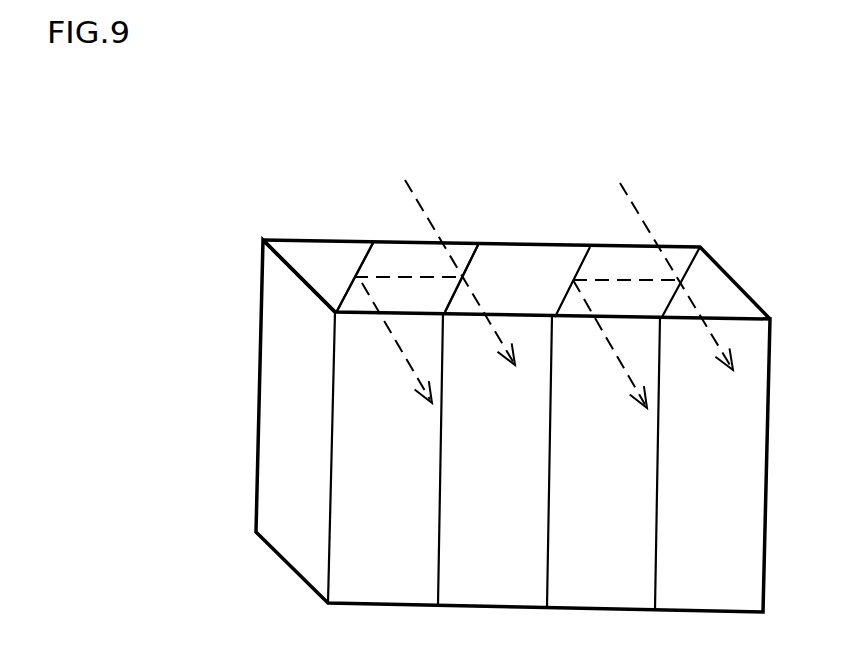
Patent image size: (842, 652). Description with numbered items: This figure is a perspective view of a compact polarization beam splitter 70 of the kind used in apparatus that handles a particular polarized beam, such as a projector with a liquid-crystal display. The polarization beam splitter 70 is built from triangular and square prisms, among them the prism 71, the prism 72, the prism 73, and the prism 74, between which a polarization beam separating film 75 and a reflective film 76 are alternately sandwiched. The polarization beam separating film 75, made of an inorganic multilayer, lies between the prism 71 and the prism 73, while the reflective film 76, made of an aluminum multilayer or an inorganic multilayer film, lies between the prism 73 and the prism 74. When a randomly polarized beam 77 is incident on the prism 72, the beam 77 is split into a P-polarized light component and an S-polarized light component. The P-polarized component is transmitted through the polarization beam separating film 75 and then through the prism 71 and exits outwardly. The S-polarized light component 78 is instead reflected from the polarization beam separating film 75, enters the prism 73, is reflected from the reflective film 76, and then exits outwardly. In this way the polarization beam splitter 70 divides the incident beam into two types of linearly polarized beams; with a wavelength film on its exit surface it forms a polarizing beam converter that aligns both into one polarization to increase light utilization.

The polarization beam splitter 70 is at (681, 247).
The prism 71 is at (493, 275).
The prism 72 is at (430, 275).
The prism 73 is at (352, 294).
The prism 74 is at (298, 240).
The polarization beam separating film 75 is at (470, 263).
The reflective film 76 is at (348, 240).
The randomly polarized beam 77 is at (417, 195).
The S-polarized light component 78 is at (383, 358).